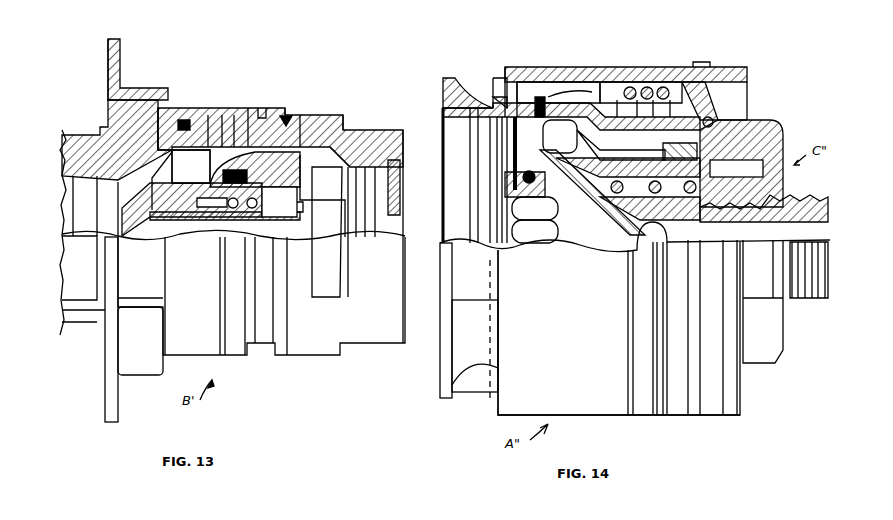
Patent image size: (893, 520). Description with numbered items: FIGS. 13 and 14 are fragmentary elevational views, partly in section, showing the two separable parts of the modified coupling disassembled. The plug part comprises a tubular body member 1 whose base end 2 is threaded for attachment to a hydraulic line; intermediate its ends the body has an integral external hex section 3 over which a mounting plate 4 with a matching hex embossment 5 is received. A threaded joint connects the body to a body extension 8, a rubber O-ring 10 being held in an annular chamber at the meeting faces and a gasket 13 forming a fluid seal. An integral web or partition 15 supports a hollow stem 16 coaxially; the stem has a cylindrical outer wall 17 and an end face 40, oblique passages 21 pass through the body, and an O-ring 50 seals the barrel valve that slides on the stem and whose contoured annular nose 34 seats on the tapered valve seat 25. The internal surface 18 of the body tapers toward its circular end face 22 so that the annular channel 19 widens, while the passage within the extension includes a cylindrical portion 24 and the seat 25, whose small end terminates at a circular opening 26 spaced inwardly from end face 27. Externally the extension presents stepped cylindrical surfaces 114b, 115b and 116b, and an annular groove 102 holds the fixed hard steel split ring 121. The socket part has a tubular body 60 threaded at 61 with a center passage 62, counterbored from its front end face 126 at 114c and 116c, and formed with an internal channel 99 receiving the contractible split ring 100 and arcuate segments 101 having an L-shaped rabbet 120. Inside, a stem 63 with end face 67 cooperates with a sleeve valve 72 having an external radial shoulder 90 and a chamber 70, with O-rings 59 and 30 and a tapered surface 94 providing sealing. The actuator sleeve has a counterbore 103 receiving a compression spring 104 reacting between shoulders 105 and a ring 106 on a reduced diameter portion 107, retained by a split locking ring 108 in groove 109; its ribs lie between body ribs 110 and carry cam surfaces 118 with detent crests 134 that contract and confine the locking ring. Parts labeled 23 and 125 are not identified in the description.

In FIG. 13, the tubular body member 1 is at (85, 142).
In FIG. 13, the base end 2 is at (68, 140).
In FIG. 13, the external hex section 3 is at (112, 110).
In FIG. 13, the plate 4 is at (108, 58).
In FIG. 13, the hex embossment 5 is at (125, 88).
In FIG. 13, the body extension 8 is at (200, 125).
In FIG. 13, the O-ring 10 is at (172, 112).
In FIG. 13, the gasket 13 is at (185, 188).
In FIG. 13, the web or partition 15 is at (210, 118).
In FIG. 13, the hollow stem 16 is at (158, 232).
In FIG. 13, the cylindrical outer wall 17 is at (191, 166).
In FIG. 13, the internal surface 18 is at (236, 120).
In FIG. 13, the annular channel 19 is at (224, 118).
In FIG. 13, the oblique passages 21 is at (136, 183).
In FIG. 13, the circular end face 22 is at (250, 110).
In FIG. 13, the spring 23 is at (348, 200).
In FIG. 13, the cylindrical portion 24 is at (286, 116).
In FIG. 13, the valve seat portion 25 is at (306, 120).
In FIG. 13, the circular opening 26 is at (376, 237).
In FIG. 13, the end face 27 is at (406, 130).
In FIG. 13, the O-ring 30 is at (402, 168).
In FIG. 13, the annular nose 34 is at (348, 215).
In FIG. 13, the end face 40 is at (266, 232).
In FIG. 13, the O-ring 50 is at (277, 194).
In FIG. 13, the annular groove 102 is at (262, 112).
In FIG. 13, the cylindrical surface 114b is at (195, 122).
In FIG. 13, the common cylindrical surface 115b is at (340, 118).
In FIG. 13, the cylindrical surface 116b is at (352, 135).
In FIG. 13, the fixed split ring 121 is at (292, 112).
In FIG. 14, the O-ring 59 is at (530, 153).
In FIG. 14, the tubular body member 60 is at (762, 364).
In FIG. 14, the threads 61 is at (814, 298).
In FIG. 14, the center passage 62 is at (764, 217).
In FIG. 14, the stem 63 is at (650, 200).
In FIG. 14, the end face 67 is at (505, 176).
In FIG. 14, the chamber 70 is at (560, 136).
In FIG. 14, the sleeve valve 72 is at (620, 192).
In FIG. 14, the external radial shoulder 90 is at (582, 158).
In FIG. 14, the tapered surface 94 is at (535, 220).
In FIG. 14, the internal channel 99 is at (486, 75).
In FIG. 14, the split ring 100 is at (512, 67).
In FIG. 14, the segments 101 is at (500, 96).
In FIG. 14, the counterbore 103 is at (748, 95).
In FIG. 14, the compression spring 104 is at (665, 88).
In FIG. 14, the radial shoulders 105 is at (632, 88).
In FIG. 14, the signal adapter ring 106 is at (705, 82).
In FIG. 14, the reduced diameter portion 107 is at (780, 122).
In FIG. 14, the split locking ring 108 is at (710, 116).
In FIG. 14, the groove 109 is at (747, 120).
In FIG. 14, the body ribs 110 is at (480, 78).
In FIG. 14, the counterbore surface 114c is at (490, 102).
In FIG. 14, the counterbore surface 116c is at (600, 82).
In FIG. 14, the cam surfaces 118 is at (532, 82).
In FIG. 14, the rabbet 120 is at (500, 125).
In FIG. 14, the wall 125 is at (468, 80).
In FIG. 14, the front end face 126 is at (443, 78).
In FIG. 14, the crests 134 is at (556, 88).